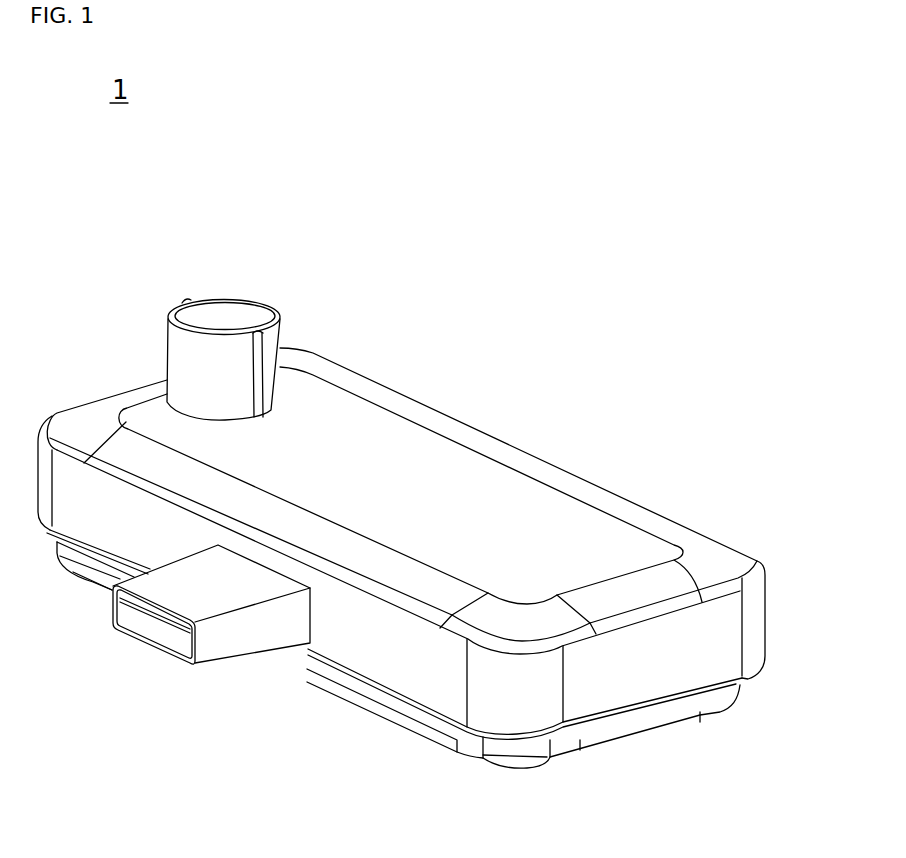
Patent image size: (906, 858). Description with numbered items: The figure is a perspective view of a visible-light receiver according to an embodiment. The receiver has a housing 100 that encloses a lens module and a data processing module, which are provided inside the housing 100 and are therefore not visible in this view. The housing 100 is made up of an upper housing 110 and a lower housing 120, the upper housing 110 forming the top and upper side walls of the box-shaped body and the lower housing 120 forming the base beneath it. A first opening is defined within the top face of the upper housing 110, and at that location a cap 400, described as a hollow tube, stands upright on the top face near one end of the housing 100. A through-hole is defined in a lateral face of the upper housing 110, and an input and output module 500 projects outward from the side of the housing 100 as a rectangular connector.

The housing 100 is at (728, 445).
The upper housing 110 is at (592, 520).
The lower housing 120 is at (670, 723).
The cap 400 is at (212, 272).
The input and output module 500 is at (227, 686).